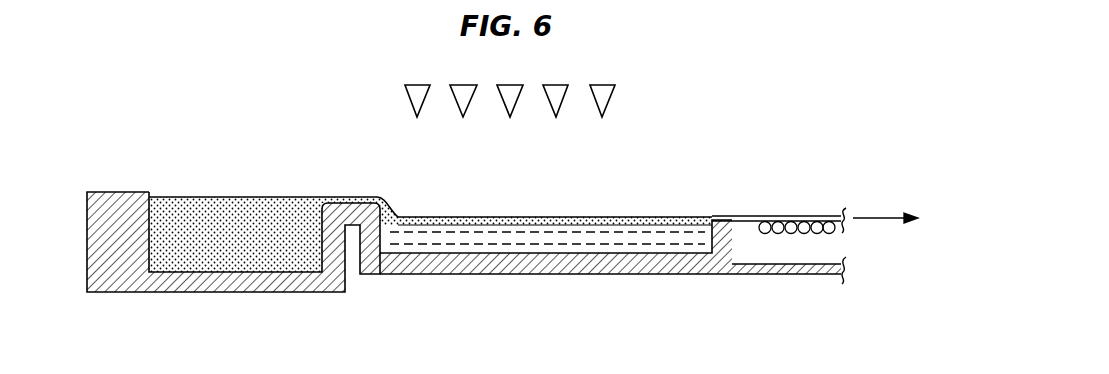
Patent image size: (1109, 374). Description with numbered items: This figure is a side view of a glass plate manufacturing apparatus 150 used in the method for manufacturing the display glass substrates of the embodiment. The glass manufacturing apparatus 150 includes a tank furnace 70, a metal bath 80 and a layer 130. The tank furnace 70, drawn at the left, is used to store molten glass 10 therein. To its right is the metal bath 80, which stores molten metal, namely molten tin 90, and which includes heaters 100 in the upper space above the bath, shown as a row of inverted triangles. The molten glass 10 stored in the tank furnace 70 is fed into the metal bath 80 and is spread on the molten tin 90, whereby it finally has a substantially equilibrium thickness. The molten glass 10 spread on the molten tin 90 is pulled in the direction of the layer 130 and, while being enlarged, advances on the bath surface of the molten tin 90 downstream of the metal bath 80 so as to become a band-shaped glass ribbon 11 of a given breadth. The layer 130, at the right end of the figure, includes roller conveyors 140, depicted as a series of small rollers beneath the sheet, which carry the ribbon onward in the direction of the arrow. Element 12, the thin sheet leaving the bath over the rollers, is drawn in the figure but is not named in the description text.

The molten glass 10 is at (234, 197).
The glass ribbon 11 is at (514, 217).
The film substrate 12 is at (805, 216).
The tank furnace 70 is at (237, 292).
The metal bath 80 is at (567, 274).
The molten tin 90 is at (593, 240).
The heaters 100 is at (409, 96).
The layer 130 is at (826, 264).
The roller conveyors 140 is at (803, 234).
The glass plate manufacturing apparatus 150 is at (764, 150).